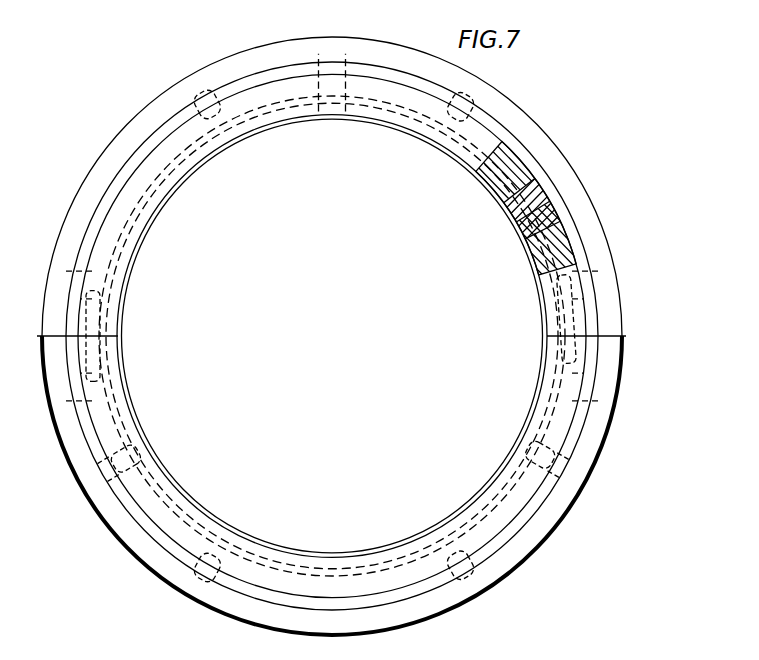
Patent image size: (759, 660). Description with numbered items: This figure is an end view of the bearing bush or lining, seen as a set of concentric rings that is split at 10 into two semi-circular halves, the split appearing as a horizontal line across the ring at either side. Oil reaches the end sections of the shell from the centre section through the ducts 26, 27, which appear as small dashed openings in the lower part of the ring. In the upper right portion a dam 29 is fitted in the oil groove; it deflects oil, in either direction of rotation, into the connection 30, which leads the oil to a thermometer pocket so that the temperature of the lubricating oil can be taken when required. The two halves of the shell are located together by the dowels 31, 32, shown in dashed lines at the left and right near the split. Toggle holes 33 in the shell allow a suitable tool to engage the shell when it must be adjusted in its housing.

The split 10 is at (53, 334).
The duct 26 is at (545, 462).
The duct 27 is at (118, 466).
The dam 29 is at (540, 200).
The connection 30 is at (552, 222).
The dowel 31 is at (92, 342).
The dowel 32 is at (575, 303).
The toggle holes 33 is at (200, 97).